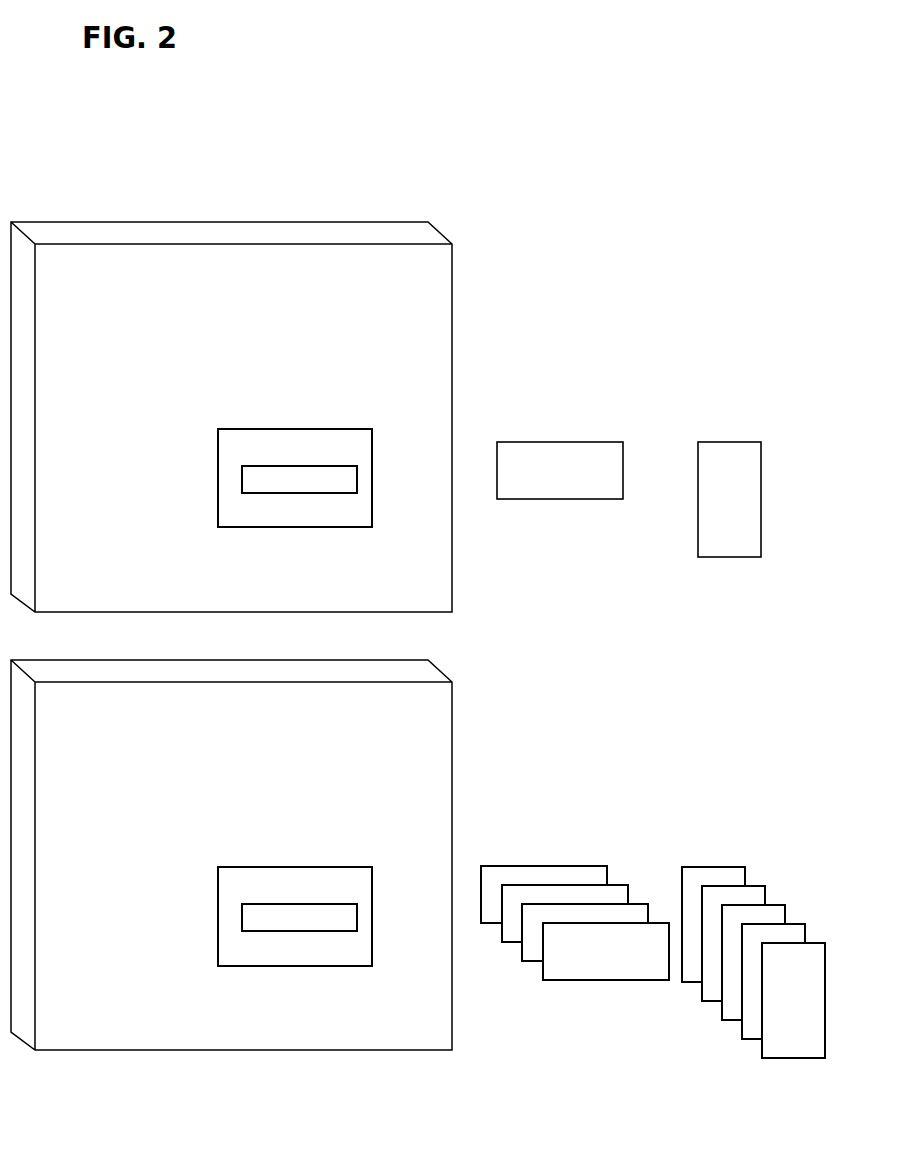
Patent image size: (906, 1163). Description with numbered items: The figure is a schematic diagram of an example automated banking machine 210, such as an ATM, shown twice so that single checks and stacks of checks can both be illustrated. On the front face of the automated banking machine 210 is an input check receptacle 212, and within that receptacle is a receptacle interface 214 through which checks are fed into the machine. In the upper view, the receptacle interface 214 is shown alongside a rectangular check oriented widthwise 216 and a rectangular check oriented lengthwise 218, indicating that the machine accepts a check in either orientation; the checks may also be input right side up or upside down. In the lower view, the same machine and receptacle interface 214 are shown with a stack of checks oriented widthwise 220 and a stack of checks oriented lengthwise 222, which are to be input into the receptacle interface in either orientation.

The automated banking machine 210 is at (452, 333).
The input check receptacle 212 is at (330, 429).
The receptacle interface 214 is at (335, 493).
The rectangular check oriented widthwise 216 is at (559, 442).
The rectangular check oriented lengthwise 218 is at (730, 442).
The stack of checks oriented widthwise 220 is at (476, 845).
The stack of checks oriented lengthwise 222 is at (677, 845).